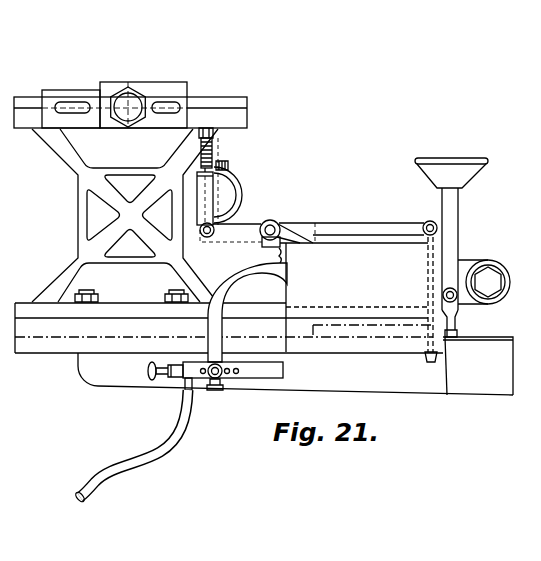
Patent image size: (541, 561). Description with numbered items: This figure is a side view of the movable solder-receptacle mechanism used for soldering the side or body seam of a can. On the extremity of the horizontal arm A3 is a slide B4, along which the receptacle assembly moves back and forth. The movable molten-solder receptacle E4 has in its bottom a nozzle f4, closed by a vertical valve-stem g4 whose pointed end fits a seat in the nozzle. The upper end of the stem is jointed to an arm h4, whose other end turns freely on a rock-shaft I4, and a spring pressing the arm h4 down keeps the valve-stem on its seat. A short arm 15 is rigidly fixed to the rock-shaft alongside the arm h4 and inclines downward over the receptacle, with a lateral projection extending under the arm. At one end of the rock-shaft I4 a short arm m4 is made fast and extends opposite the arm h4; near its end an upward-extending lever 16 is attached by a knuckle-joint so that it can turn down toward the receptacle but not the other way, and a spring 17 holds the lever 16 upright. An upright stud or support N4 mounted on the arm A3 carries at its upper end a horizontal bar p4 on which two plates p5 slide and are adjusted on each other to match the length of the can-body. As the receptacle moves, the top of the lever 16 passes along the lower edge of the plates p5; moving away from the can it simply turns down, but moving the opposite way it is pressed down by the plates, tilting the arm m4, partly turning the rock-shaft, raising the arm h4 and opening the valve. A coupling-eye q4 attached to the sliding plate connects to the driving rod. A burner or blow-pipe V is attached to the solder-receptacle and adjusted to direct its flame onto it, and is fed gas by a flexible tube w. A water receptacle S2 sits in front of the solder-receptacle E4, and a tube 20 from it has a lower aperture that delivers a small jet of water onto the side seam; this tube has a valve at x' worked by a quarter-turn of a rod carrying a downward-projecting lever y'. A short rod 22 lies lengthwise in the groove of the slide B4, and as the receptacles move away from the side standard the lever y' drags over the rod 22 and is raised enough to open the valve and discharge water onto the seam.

The horizontal bar p4 is at (223, 90).
The plates p5 is at (56, 97).
The upright stud or support N4 is at (130, 213).
The slide B4 is at (45, 347).
The upward-extending lever 16 is at (206, 194).
The spring 17 is at (238, 197).
The short arm m4 is at (236, 232).
The movable molten-solder receptacle E4 is at (356, 297).
The nozzle f4 is at (424, 356).
The rock-shaft I4 is at (270, 221).
The short arm 15 is at (297, 245).
The arm h4 is at (373, 230).
The vertical valve-stem g4 is at (433, 232).
The water receptacle S2 is at (437, 174).
The tube 20 is at (455, 215).
The downward-projecting lever y' is at (473, 339).
The coupling-eye q4 is at (470, 303).
The valve x' is at (428, 293).
The horizontal arm A3 is at (478, 366).
The short rod 22 is at (447, 388).
The burner or blow-pipe V is at (236, 382).
The flexible tube w is at (127, 458).